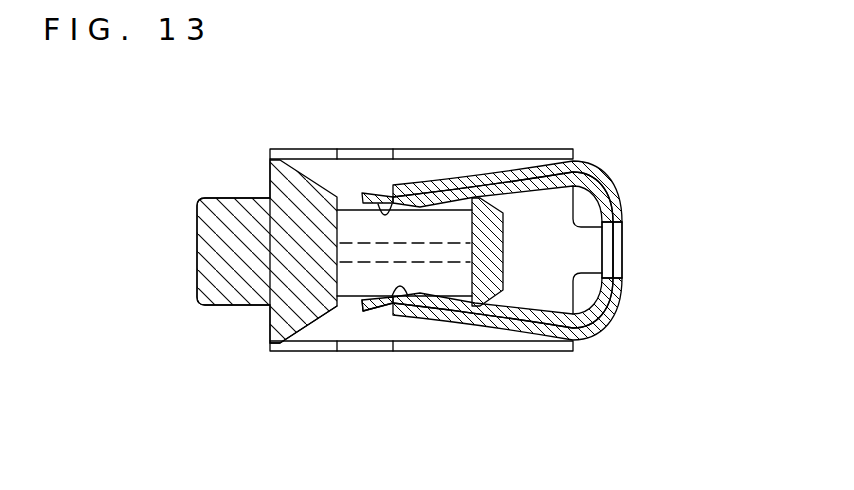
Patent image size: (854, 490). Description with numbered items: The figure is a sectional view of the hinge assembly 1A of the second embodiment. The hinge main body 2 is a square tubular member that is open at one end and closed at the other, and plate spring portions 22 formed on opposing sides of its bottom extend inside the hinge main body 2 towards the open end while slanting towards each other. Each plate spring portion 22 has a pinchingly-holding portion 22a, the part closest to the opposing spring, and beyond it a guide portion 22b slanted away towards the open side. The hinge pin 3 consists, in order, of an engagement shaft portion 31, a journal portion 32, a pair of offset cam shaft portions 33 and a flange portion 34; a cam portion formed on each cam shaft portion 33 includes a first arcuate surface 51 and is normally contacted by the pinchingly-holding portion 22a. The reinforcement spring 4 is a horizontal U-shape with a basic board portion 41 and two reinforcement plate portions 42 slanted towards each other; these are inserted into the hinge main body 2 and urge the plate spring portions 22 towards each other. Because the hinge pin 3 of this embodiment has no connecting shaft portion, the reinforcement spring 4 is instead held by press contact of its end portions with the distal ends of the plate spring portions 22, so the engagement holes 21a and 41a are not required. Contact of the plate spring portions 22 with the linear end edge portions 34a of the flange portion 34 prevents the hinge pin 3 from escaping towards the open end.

The hinge assembly 1A is at (522, 102).
The hinge main body 2 is at (543, 355).
The hinge pin 3 is at (232, 196).
The reinforcement spring 4 is at (552, 258).
The engagement hole 21a is at (625, 232).
The plate spring portion 22 is at (420, 186).
The pinchingly-holding portion 22a is at (378, 198).
The guide portion 22b is at (362, 310).
The engagement shaft portion 31 is at (226, 305).
The journal portion 32 is at (304, 334).
The cam shaft portion 33 is at (372, 297).
The flange portion 34 is at (505, 225).
The end edge portion 34a is at (455, 198).
The basic board portion 41 is at (620, 313).
The engagement hole 41a is at (622, 277).
The reinforcement plate portion 42 is at (492, 176).
The first arcuate surface 51 is at (357, 243).